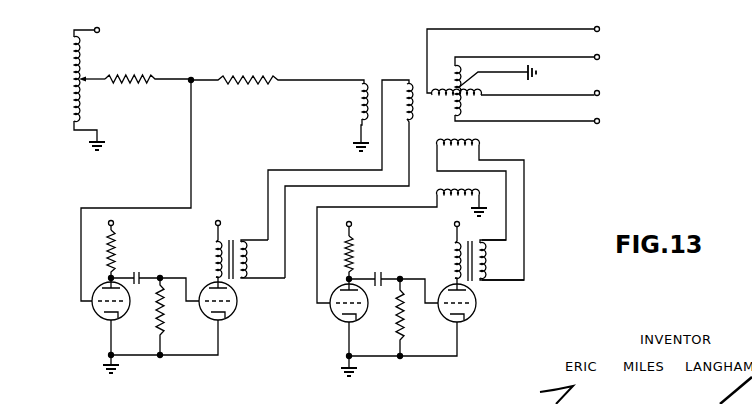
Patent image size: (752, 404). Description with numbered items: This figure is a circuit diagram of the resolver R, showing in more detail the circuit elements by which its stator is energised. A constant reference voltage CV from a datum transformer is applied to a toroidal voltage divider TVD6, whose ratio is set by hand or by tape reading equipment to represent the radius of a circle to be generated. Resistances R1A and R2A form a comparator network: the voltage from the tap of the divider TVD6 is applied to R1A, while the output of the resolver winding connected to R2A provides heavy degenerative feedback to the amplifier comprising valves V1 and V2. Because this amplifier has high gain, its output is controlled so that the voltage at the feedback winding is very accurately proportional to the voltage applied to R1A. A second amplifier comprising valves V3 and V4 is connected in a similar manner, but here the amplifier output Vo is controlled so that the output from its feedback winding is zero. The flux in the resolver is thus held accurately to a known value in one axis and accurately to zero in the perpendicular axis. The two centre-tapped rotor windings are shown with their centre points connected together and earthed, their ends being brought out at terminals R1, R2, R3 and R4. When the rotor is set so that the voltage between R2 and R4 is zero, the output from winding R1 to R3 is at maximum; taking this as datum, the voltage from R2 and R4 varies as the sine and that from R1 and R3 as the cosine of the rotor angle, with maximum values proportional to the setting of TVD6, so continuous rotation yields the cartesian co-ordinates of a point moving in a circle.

The constant reference voltage CV is at (97, 25).
The toroidal voltage divider TVD6 is at (55, 94).
The resistance R1A is at (148, 66).
The resistance R2A is at (277, 66).
The resolver R is at (340, 163).
The rotor output terminal R1 is at (528, 57).
The rotor output terminal R2 is at (542, 63).
The rotor output terminal R3 is at (530, 99).
The rotor output terminal R4 is at (542, 102).
The amplifier output Vo is at (420, 221).
The valve V1 is at (142, 226).
The valve V2 is at (301, 215).
The valve V3 is at (380, 299).
The valve V4 is at (481, 280).